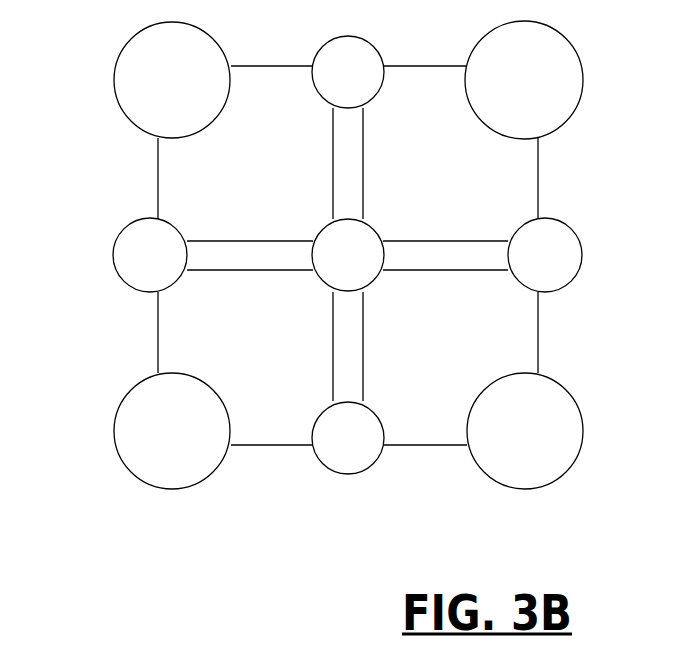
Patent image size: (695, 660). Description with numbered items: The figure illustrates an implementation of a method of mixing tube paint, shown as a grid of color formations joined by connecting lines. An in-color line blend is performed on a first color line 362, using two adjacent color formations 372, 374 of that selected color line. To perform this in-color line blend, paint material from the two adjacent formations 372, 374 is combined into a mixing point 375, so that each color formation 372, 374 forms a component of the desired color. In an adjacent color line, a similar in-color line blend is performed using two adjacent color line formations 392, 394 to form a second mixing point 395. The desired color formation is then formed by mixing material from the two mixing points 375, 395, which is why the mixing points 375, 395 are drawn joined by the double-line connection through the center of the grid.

The first color line 362 is at (260, 462).
The color formation 372 is at (118, 457).
The color formation 374 is at (115, 81).
The mixing point 375 is at (113, 262).
The color line formation 392 is at (582, 420).
The color line formation 394 is at (573, 44).
The mixing point 395 is at (577, 236).